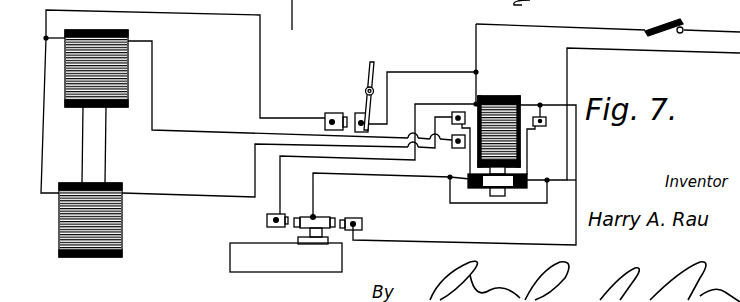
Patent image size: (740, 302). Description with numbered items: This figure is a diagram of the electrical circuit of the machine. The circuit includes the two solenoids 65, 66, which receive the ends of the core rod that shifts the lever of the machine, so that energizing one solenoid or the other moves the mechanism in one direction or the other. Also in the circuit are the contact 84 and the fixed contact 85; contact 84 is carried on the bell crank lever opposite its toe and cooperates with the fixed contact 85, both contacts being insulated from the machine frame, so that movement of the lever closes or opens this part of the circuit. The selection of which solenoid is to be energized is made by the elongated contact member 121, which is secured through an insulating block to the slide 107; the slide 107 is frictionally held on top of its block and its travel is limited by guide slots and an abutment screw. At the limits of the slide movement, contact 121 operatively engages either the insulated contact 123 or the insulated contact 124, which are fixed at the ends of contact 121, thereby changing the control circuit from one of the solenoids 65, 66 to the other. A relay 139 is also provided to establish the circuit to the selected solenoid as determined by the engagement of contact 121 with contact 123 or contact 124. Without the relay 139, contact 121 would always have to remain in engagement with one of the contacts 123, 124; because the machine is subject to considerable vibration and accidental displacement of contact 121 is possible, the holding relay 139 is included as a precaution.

The solenoid 66 is at (67, 70).
The solenoid 65 is at (67, 225).
The fixed contact 85 is at (344, 112).
The contact 84 is at (348, 113).
The relay 139 is at (518, 97).
The insulated contact 123 is at (285, 216).
The elongated contact member 121 is at (320, 217).
The insulated contact 124 is at (340, 220).
The slide 107 is at (276, 261).